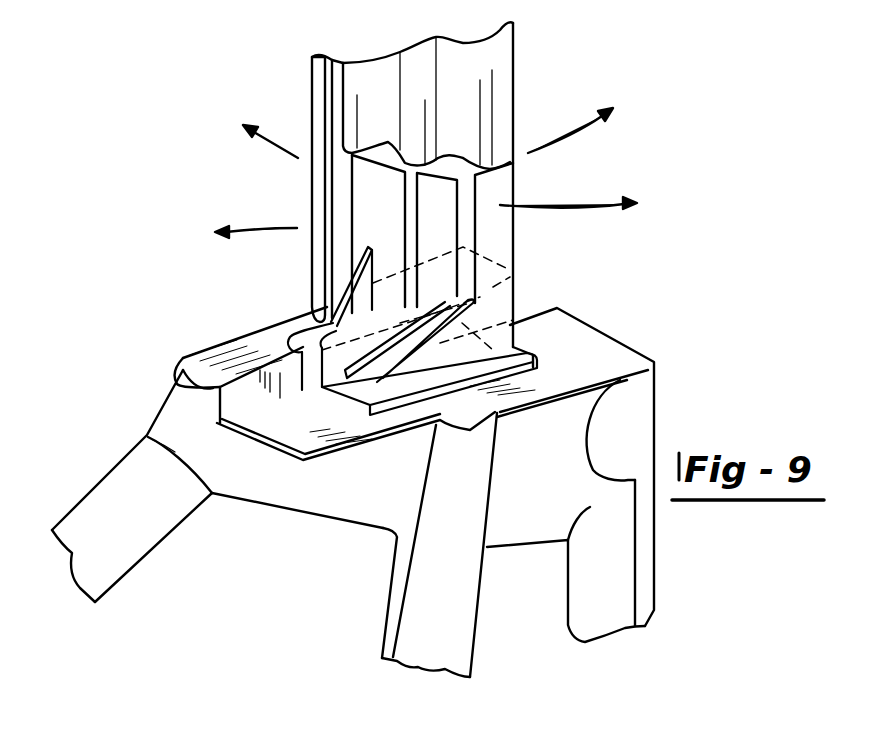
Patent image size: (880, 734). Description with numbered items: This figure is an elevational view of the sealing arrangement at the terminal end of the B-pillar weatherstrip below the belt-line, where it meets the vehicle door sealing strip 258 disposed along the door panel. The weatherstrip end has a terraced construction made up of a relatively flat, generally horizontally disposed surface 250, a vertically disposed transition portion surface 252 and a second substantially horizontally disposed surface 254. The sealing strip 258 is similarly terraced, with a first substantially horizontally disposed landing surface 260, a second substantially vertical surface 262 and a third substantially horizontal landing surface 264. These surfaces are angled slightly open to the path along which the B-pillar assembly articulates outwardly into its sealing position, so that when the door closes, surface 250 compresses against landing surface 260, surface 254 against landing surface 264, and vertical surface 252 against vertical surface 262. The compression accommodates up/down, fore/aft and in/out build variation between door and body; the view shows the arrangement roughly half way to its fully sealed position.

The generally horizontally disposed surface 250 is at (298, 353).
The vertically disposed transition portion surface 252 is at (284, 378).
The second substantially horizontally disposed surface 254 is at (350, 407).
The vehicle door sealing strip 258 is at (605, 365).
The first substantially horizontally disposed landing surface 260 is at (252, 343).
The second substantially vertical surface 262 is at (232, 400).
The third substantially horizontal landing surface 264 is at (303, 442).